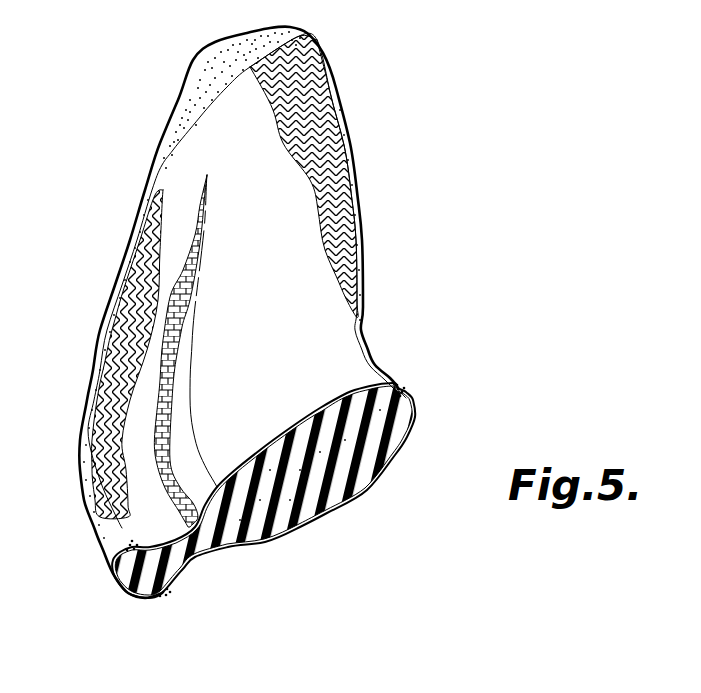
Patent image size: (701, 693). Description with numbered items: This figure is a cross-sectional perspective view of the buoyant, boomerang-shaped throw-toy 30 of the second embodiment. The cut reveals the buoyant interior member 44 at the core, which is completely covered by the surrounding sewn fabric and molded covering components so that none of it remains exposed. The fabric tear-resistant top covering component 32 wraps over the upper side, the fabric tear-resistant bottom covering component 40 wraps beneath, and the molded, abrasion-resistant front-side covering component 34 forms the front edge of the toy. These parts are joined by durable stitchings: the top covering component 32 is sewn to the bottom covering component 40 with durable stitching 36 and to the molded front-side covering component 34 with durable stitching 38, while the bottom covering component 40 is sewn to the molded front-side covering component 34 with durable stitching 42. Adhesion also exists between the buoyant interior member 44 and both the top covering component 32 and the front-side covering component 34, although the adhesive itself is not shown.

The buoyant, boomerang-shaped throw-toy 30 is at (400, 252).
The fabric tear-resistant top covering component 32 is at (347, 179).
The molded, abrasion-resistant front-side covering component 34 is at (161, 138).
The durable stitching 36 is at (398, 389).
The durable stitching 38 is at (132, 547).
The fabric tear-resistant bottom covering component 40 is at (277, 538).
The durable stitching 42 is at (169, 592).
The buoyant interior member 44 is at (362, 468).